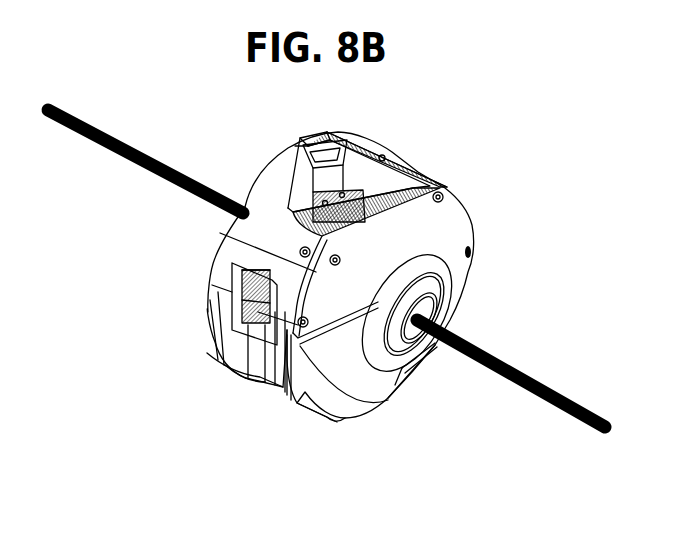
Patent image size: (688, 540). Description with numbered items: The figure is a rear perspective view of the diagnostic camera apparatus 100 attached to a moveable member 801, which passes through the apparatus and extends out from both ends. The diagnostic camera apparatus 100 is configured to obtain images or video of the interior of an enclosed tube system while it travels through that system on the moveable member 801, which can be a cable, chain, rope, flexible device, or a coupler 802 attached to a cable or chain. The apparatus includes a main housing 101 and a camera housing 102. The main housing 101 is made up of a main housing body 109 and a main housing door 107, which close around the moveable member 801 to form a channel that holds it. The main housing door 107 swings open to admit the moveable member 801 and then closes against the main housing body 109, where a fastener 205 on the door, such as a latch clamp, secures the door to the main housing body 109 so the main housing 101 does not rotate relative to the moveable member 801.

The diagnostic camera apparatus 100 is at (506, 194).
The main housing 101 is at (397, 393).
The camera housing 102 is at (285, 178).
The main housing door 107 is at (315, 392).
The main housing body 109 is at (403, 378).
The fastener 205 is at (248, 333).
The moveable member 801 is at (572, 397).
The coupler 802 is at (425, 292).